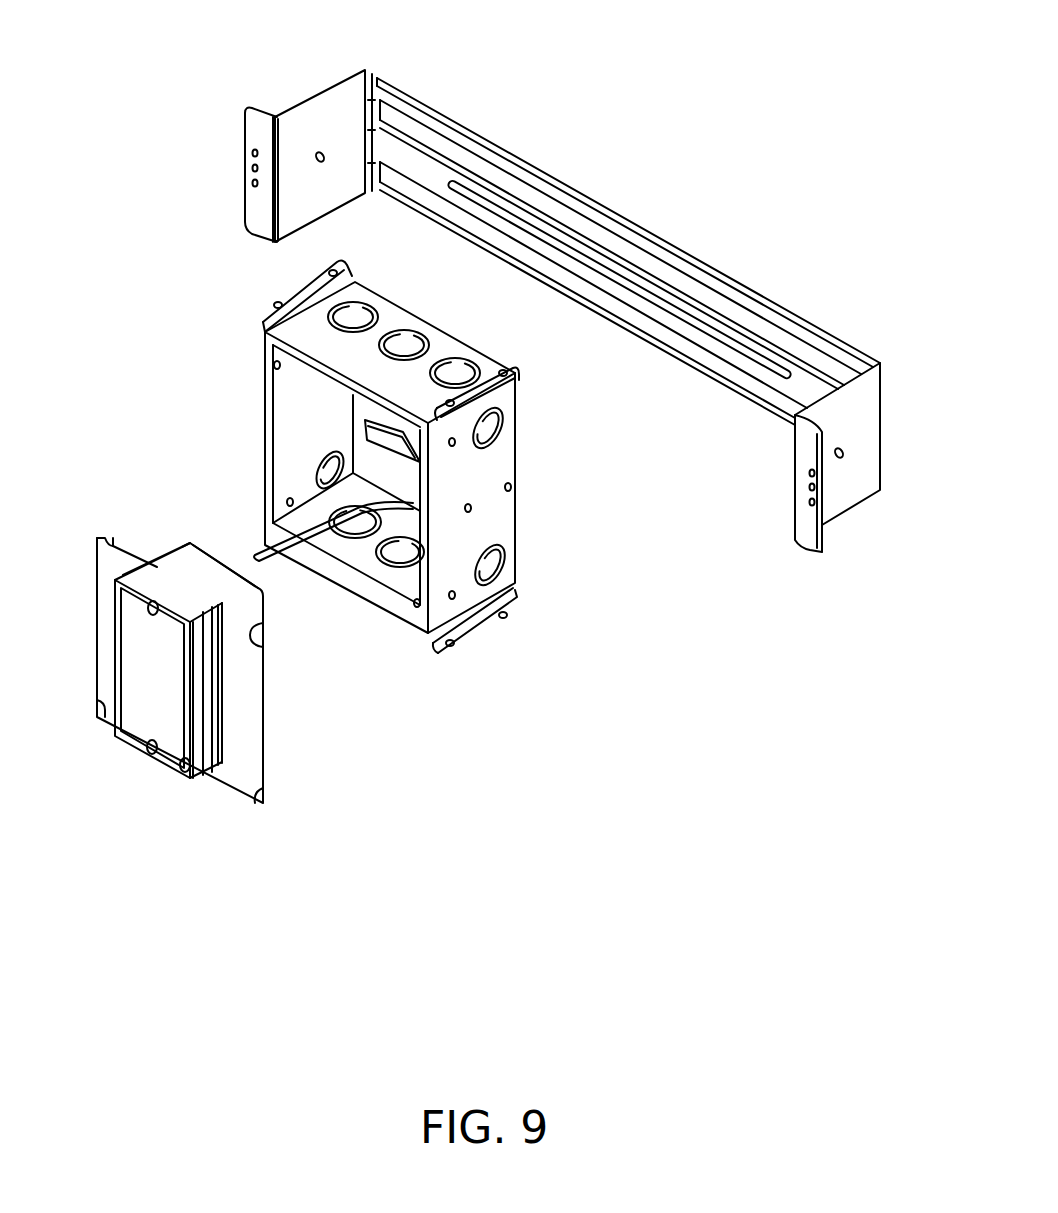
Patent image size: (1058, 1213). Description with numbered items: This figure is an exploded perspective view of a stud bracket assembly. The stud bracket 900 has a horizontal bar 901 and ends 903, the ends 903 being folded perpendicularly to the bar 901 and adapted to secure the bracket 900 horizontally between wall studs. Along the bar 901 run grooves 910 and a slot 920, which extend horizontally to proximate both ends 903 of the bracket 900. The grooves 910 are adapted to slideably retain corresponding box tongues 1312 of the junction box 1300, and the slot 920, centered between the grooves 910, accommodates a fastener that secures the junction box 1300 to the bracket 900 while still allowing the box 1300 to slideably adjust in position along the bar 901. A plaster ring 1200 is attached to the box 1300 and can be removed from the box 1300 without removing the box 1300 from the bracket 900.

The stud bracket 900 is at (368, 68).
The horizontal bar 901 is at (655, 230).
The ends 903 is at (310, 97).
The grooves 910 is at (777, 333).
The slot 920 is at (485, 200).
The junction box 1300 is at (287, 288).
The box tongues 1312 is at (358, 428).
The plaster ring 1200 is at (130, 546).